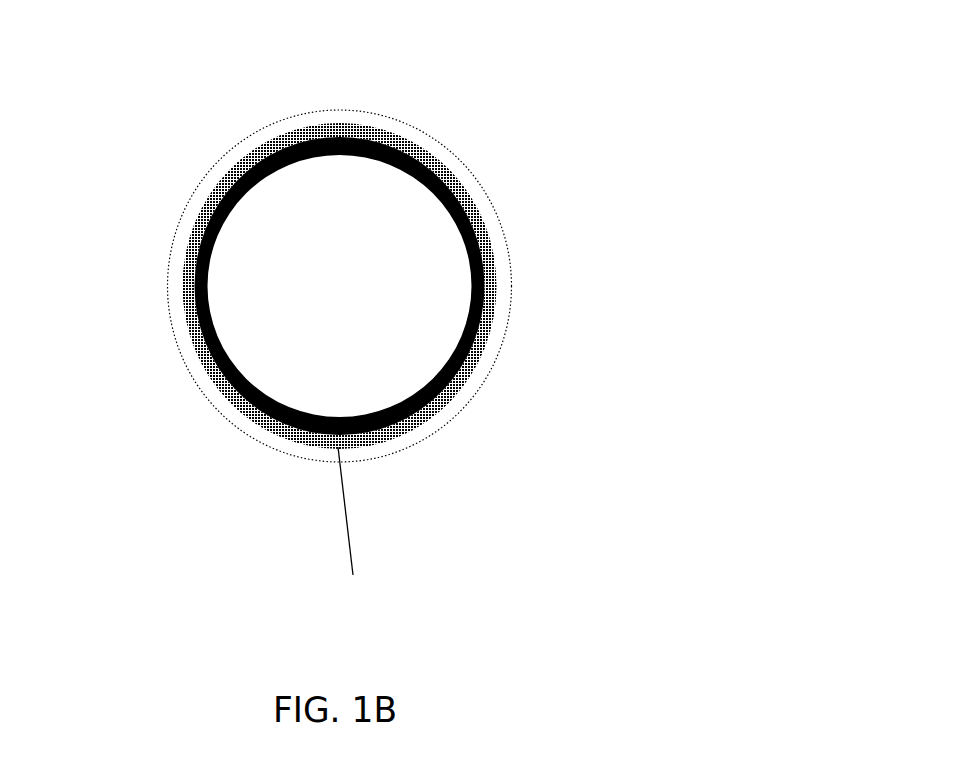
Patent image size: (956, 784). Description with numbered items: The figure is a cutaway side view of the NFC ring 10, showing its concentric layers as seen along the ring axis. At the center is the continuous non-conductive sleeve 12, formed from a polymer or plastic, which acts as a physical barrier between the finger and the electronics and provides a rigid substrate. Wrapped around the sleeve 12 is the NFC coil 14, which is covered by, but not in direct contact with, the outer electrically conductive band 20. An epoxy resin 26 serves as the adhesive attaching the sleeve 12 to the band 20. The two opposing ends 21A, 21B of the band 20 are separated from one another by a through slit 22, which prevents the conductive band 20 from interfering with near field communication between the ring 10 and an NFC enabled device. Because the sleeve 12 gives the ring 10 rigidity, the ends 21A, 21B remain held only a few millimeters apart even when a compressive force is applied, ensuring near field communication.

The NFC ring 10 is at (573, 112).
The non-conductive sleeve 12 is at (212, 243).
The NFC coil 14 is at (207, 365).
The electrically conductive band 20 is at (262, 136).
The first end of the band 21A is at (281, 490).
The second end of the band 21B is at (402, 485).
The through slit 22 is at (357, 534).
The epoxy resin 26 is at (453, 390).